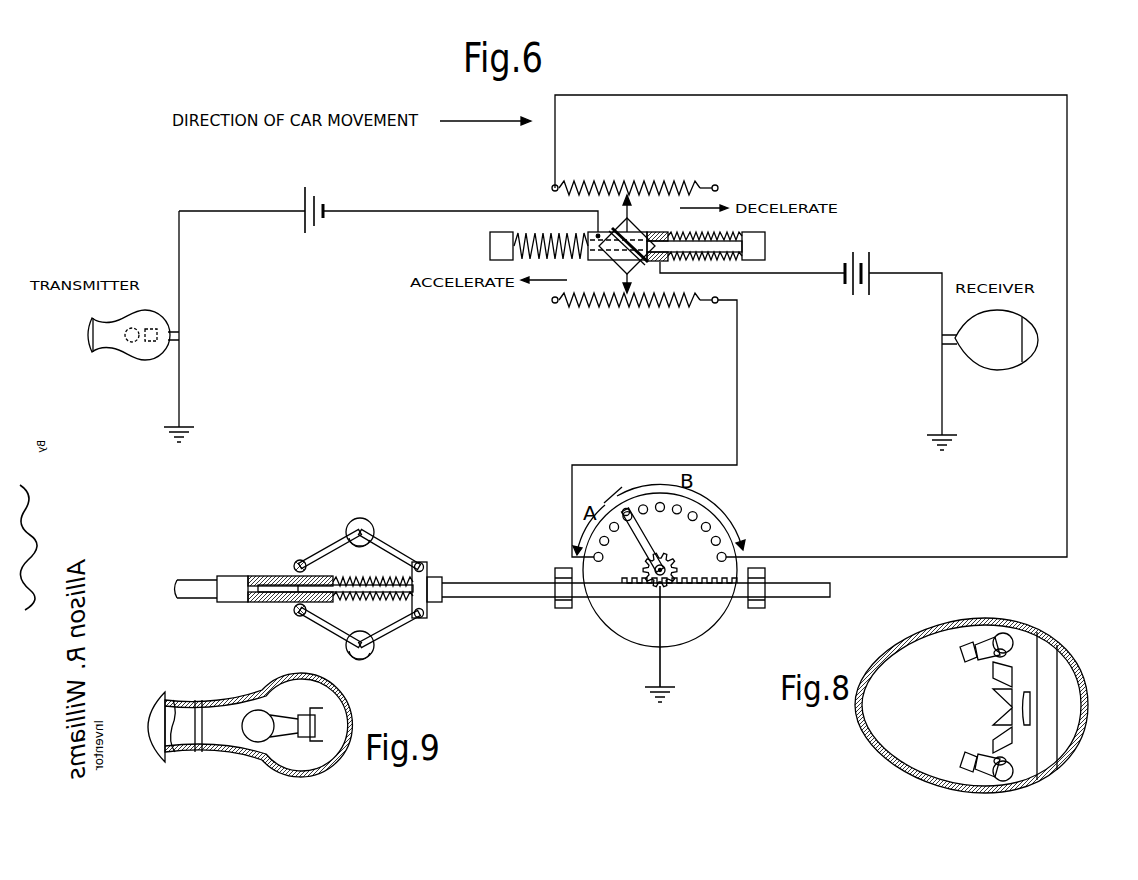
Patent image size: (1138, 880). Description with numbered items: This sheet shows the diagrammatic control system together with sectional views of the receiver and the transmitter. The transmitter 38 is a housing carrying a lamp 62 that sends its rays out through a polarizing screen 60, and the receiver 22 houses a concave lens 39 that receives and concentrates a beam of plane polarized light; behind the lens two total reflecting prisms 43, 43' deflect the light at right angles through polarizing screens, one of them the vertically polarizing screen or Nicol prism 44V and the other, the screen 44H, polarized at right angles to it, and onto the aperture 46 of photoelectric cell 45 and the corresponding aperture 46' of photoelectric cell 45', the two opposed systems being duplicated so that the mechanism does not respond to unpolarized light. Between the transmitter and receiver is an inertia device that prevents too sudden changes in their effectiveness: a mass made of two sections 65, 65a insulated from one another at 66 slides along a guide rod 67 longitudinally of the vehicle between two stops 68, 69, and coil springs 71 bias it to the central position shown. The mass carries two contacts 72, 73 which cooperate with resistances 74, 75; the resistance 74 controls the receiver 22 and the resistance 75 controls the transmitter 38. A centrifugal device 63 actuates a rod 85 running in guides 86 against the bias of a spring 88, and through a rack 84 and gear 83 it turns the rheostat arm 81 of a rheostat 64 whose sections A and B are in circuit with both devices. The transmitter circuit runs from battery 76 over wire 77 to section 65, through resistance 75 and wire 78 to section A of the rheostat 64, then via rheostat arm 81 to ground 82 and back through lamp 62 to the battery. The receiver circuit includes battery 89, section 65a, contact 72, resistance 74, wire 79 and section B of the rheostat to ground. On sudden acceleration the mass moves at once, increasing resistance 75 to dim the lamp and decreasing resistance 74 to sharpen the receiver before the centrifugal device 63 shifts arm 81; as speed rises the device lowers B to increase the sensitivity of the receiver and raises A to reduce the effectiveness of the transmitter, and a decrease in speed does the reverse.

In FIG. 6, the wire 79 is at (815, 96).
In FIG. 6, the resistance 74 is at (680, 188).
In FIG. 6, the resistance 75 is at (614, 305).
In FIG. 6, the wire 78 is at (738, 378).
In FIG. 6, the wire 77 is at (423, 210).
In FIG. 6, the battery 76 is at (325, 212).
In FIG. 6, the guide rod 67 is at (706, 256).
In FIG. 6, the battery 89 is at (868, 262).
In FIG. 6, the stop 68 is at (488, 247).
In FIG. 6, the stop 69 is at (765, 246).
In FIG. 6, the coil springs 71 is at (552, 233).
In FIG. 6, the section of inertia mass 65 is at (616, 262).
In FIG. 6, the insulation 66 is at (620, 232).
In FIG. 6, the contact 72 is at (628, 211).
In FIG. 6, the contact 73 is at (630, 282).
In FIG. 6, the section of inertia mass 65a is at (648, 236).
In FIG. 6, the transmitter 38 is at (94, 348).
In FIG. 9, the transmitter 38 is at (352, 703).
In FIG. 6, the lamp 62 is at (131, 350).
In FIG. 9, the lamp 62 is at (258, 710).
In FIG. 6, the receiver 22 is at (983, 362).
In FIG. 8, the receiver 22 is at (875, 745).
In FIG. 6, the ground 82 is at (183, 430).
In FIG. 6, the centrifugal device 63 is at (378, 544).
In FIG. 6, the spring 88 is at (355, 578).
In FIG. 6, the rod 85 is at (505, 583).
In FIG. 6, the guides 86 is at (563, 608).
In FIG. 6, the rheostat 64 is at (626, 638).
In FIG. 6, the gear 83 is at (672, 562).
In FIG. 6, the rheostat arm 81 is at (641, 544).
In FIG. 6, the rack 84 is at (688, 582).
In FIG. 9, the polarizing screen 60 is at (190, 712).
In FIG. 8, the photoelectric cell 45 is at (986, 628).
In FIG. 8, the aperture 46 is at (1011, 625).
In FIG. 8, the photoelectric cell 45' is at (1013, 779).
In FIG. 8, the lamp filament 46' is at (964, 784).
In FIG. 8, the polarizing screen 44V is at (993, 670).
In FIG. 8, the total reflecting prism 43 is at (983, 696).
In FIG. 8, the total reflecting prism 43' is at (968, 717).
In FIG. 8, the horizontal mirror 44H is at (993, 746).
In FIG. 8, the concave lens 39 is at (1030, 702).